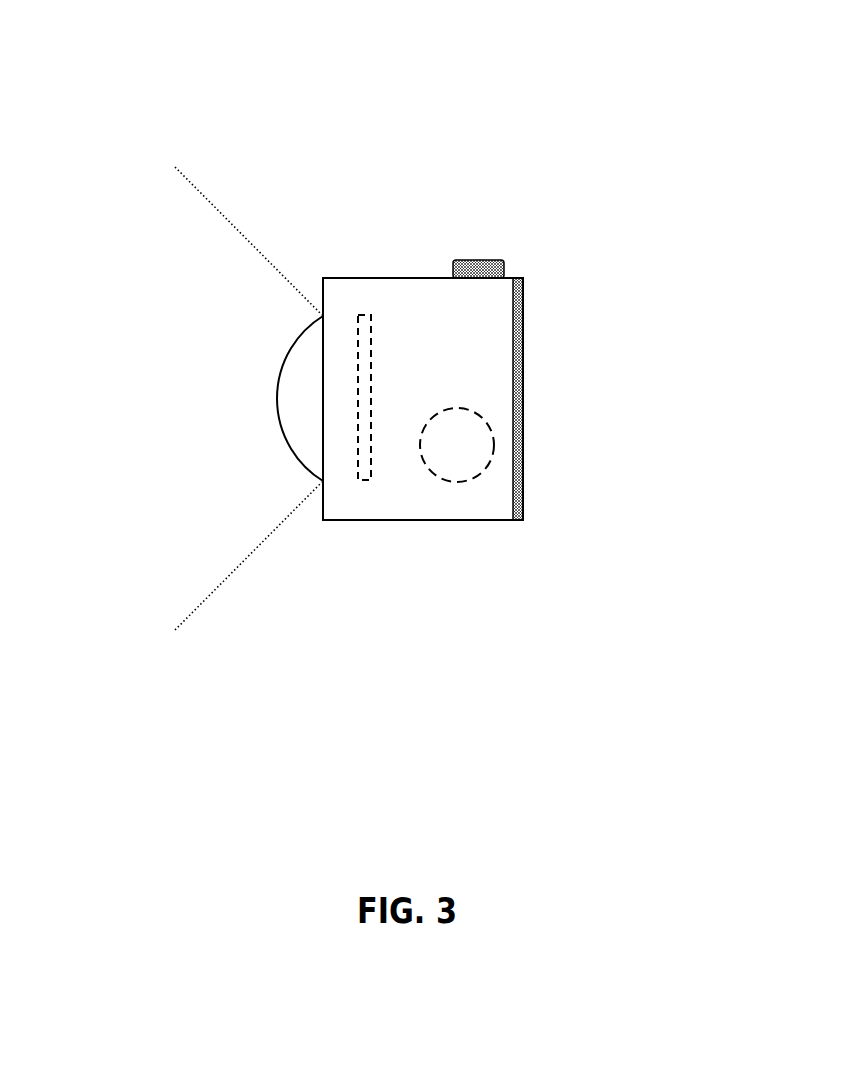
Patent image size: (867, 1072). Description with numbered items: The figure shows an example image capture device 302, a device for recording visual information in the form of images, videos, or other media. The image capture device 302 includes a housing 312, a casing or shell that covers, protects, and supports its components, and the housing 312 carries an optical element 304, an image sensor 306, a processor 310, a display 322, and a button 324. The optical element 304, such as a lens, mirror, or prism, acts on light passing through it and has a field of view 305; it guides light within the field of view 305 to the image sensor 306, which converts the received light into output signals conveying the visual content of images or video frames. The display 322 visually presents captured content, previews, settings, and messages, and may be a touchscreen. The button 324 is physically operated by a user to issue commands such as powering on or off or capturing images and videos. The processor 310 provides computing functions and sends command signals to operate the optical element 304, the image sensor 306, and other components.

The image capture device 302 is at (478, 147).
The optical element 304 is at (298, 472).
The field of view 305 is at (258, 266).
The image sensor 306 is at (367, 313).
The processor 310 is at (455, 482).
The housing 312 is at (347, 520).
The display 322 is at (523, 315).
The button 324 is at (507, 265).